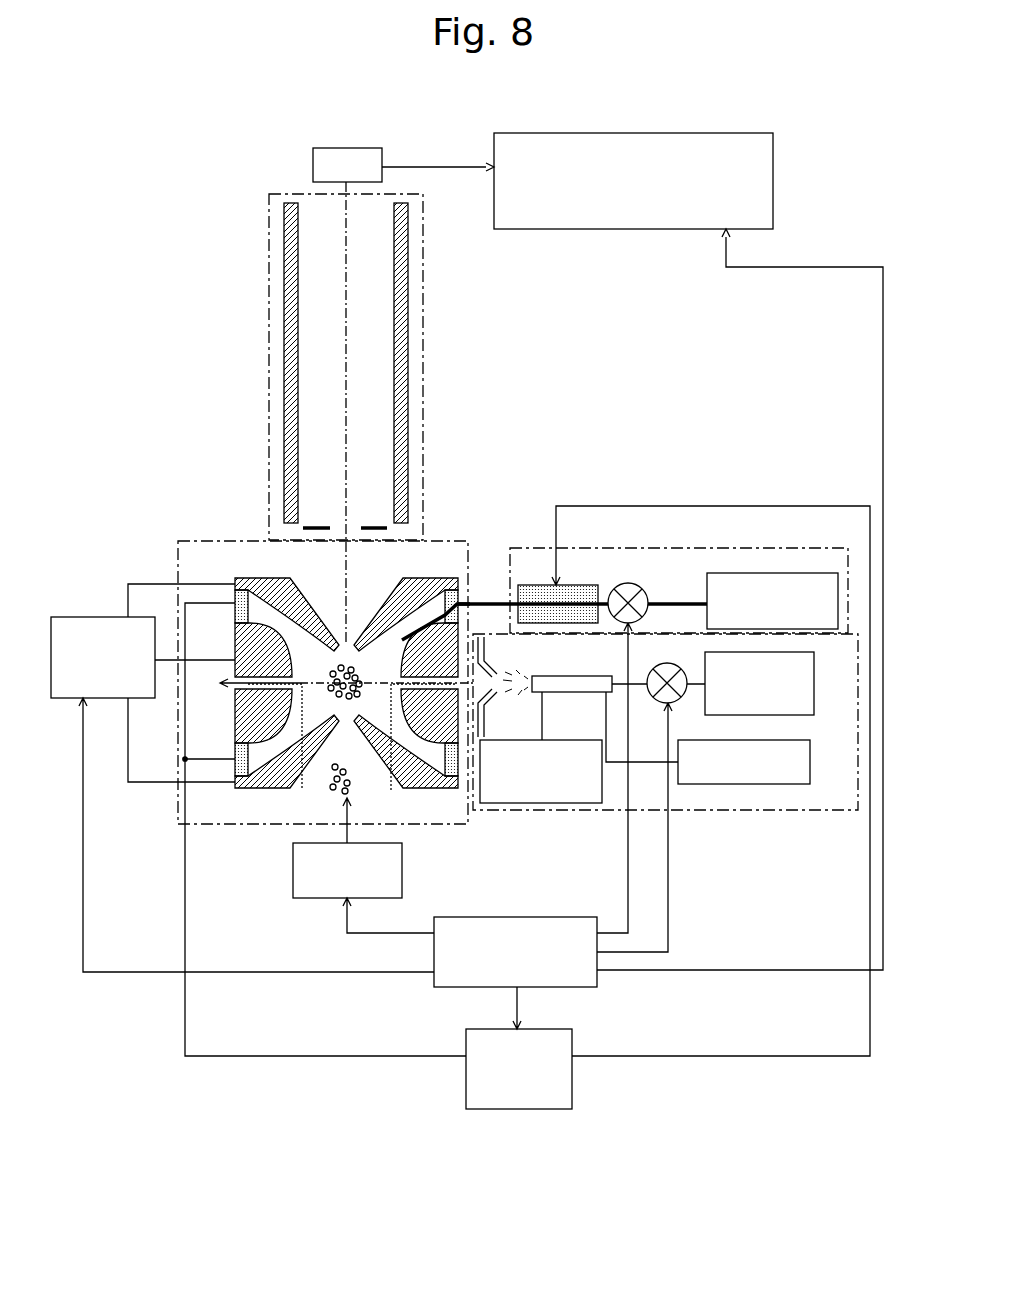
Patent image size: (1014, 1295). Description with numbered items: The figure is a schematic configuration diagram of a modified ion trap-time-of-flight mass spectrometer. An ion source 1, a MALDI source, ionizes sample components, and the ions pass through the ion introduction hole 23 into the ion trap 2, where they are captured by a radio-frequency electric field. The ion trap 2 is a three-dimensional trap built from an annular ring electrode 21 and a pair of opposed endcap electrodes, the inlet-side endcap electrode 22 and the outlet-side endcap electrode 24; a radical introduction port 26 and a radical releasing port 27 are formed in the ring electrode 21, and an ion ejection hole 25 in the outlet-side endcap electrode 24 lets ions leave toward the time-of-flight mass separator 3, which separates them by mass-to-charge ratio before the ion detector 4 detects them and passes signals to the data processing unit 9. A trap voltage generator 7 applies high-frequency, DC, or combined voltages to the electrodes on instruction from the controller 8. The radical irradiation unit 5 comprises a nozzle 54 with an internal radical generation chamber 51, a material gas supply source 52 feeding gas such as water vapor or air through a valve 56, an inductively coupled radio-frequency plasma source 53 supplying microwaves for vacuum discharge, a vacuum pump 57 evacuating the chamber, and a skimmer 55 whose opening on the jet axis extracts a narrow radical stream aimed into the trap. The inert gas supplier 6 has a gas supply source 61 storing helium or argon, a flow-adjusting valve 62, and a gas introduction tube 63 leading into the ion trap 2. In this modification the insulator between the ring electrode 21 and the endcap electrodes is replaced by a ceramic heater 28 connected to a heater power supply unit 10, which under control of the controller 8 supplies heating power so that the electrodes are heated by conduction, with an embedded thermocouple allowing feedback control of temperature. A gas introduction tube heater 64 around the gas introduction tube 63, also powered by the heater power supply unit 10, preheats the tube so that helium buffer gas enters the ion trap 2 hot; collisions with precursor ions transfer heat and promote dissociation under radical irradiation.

The ion source 1 is at (402, 868).
The ion trap 2 is at (452, 541).
The time-of-flight mass separator 3 is at (268, 282).
The ion detector 4 is at (352, 148).
The radical irradiation unit 5 is at (760, 810).
The inert gas supplier 6 is at (718, 548).
The trap voltage generator 7 is at (95, 617).
The controller 8 is at (565, 917).
The data processing unit 9 is at (697, 133).
The heater power supply unit 10 is at (466, 1037).
The ring electrode 21 is at (236, 728).
The inlet-side endcap electrode 22 is at (252, 790).
The ion introduction hole 23 is at (360, 760).
The outlet-side endcap electrode 24 is at (258, 581).
The ion ejection hole 25 is at (353, 640).
The radical introduction port 26 is at (392, 790).
The radical releasing port 27 is at (300, 792).
The ceramic heater 28 is at (236, 760).
The radical generation chamber 51 is at (568, 682).
The material gas supply source 52 is at (814, 668).
The inductively coupled radio-frequency plasma source 53 is at (560, 740).
The nozzle 54 is at (588, 676).
The skimmer 55 is at (490, 658).
The valve 56 is at (658, 700).
The vacuum pump 57 is at (810, 752).
The gas supply source 61 is at (785, 573).
The valve 62 is at (636, 585).
The gas introduction tube 63 is at (670, 600).
The gas introduction tube heater 64 is at (575, 585).